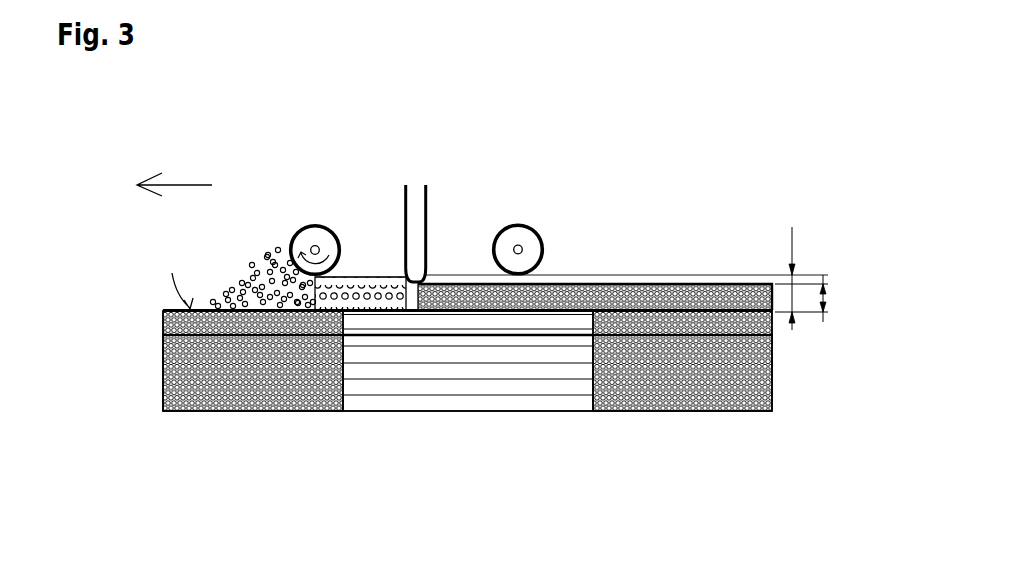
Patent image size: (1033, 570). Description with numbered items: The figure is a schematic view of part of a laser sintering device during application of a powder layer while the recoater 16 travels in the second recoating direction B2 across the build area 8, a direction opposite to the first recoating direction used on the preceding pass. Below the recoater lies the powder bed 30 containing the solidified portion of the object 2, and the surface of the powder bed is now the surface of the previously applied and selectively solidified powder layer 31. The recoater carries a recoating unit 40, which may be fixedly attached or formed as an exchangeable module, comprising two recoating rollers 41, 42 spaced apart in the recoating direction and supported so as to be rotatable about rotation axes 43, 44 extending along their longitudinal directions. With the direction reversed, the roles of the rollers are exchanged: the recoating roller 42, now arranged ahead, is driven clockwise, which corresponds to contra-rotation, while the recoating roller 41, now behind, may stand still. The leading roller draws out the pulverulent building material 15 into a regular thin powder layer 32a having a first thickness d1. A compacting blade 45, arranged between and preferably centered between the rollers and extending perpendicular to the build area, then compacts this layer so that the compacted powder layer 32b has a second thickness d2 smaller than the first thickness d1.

The object 2 is at (488, 387).
The building area 8 is at (173, 279).
The pulverulent building material 15 is at (247, 302).
The recoater 16 is at (543, 148).
The powder bed 30 is at (768, 402).
The previously applied and selectively solidified powder layer 31 is at (768, 327).
The powder layer 32a is at (360, 277).
The compacted powder layer 32b is at (730, 282).
The recoating unit 40 is at (418, 201).
The recoating roller 41 is at (522, 233).
The recoating roller 42 is at (323, 226).
The rotation axis 43 is at (515, 248).
The rotation axis 44 is at (311, 246).
The compacting blade 45 is at (417, 225).
The second recoating direction B2 is at (174, 172).
The first thickness d1 is at (801, 298).
The second thickness d2 is at (797, 278).